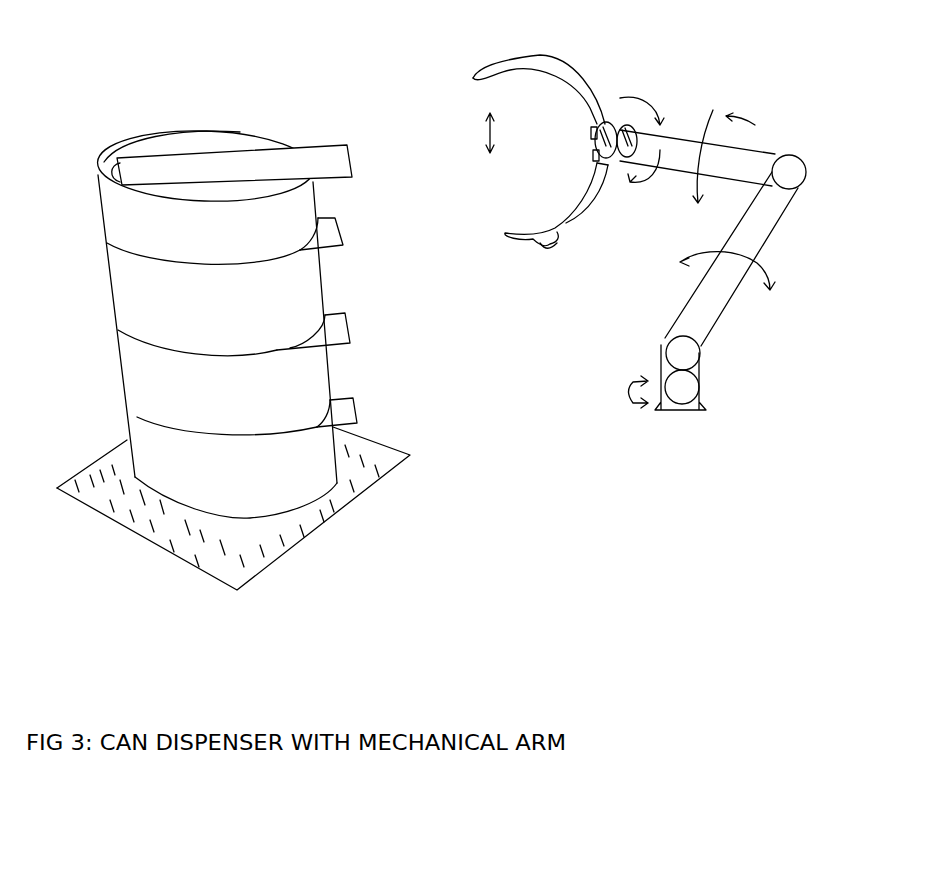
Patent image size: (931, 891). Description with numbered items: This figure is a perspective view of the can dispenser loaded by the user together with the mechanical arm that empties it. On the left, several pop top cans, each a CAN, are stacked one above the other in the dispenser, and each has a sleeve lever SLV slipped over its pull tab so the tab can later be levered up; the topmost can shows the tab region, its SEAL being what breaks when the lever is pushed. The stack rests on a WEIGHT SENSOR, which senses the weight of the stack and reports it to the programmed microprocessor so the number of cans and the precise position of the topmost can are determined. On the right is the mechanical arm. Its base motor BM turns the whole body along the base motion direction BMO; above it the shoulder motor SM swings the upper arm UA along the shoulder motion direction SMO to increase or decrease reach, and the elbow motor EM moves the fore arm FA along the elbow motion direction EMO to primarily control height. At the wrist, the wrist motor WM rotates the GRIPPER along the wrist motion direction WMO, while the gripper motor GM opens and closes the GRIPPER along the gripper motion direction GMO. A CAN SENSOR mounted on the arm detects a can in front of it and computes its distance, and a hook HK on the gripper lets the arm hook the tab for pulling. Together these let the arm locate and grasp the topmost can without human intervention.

The pop top (pull tab) can CAN is at (210, 130).
The seal of the pop top can SEAL is at (153, 134).
The sleeve lever SLV is at (320, 146).
The weight sensor WEIGHT SENSOR is at (355, 470).
The gripper GRIPPER is at (540, 62).
The gripper motor GM is at (608, 120).
The gripper motion direction GMO is at (474, 133).
The can sensor CAN SENSOR is at (592, 153).
The wrist motor WM is at (617, 168).
The wrist motion direction WMO is at (656, 110).
The hook on gripper HK is at (545, 250).
The fore arm FA is at (683, 138).
The elbow motion direction EMO is at (740, 156).
The elbow motor EM is at (806, 168).
The upper arm UA is at (773, 223).
The shoulder motion direction SMO is at (762, 271).
The shoulder motor SM is at (698, 357).
The base motor BM is at (692, 387).
The base motion direction BMO is at (622, 394).